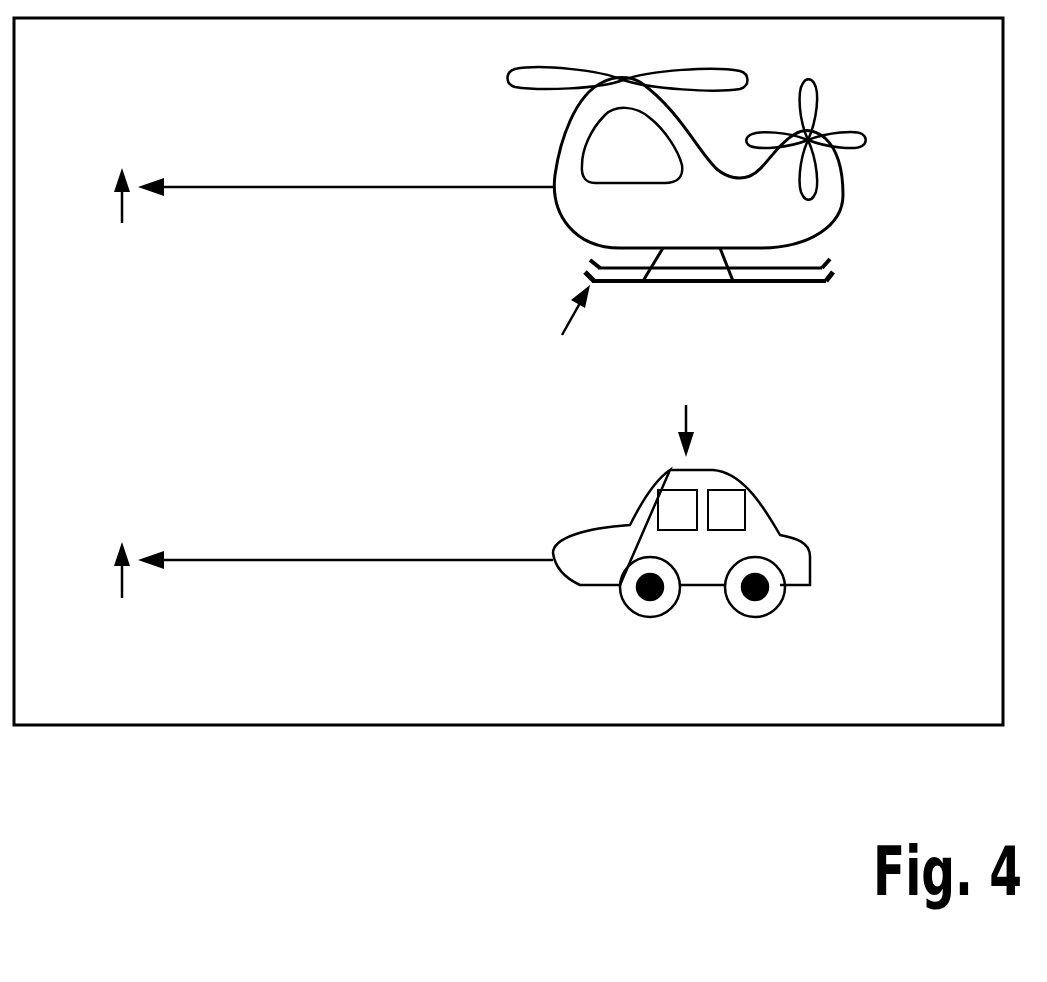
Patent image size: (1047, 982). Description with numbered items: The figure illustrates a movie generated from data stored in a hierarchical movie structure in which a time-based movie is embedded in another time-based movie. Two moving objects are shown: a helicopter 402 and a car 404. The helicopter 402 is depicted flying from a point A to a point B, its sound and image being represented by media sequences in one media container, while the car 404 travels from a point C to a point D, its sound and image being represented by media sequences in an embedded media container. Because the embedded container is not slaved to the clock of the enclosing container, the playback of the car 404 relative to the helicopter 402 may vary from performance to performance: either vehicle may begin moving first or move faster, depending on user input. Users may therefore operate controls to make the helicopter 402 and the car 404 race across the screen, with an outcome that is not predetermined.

The helicopter 402 is at (845, 194).
The car 404 is at (815, 548).
The point A is at (558, 366).
The point B is at (129, 267).
The point C is at (694, 403).
The point D is at (131, 637).